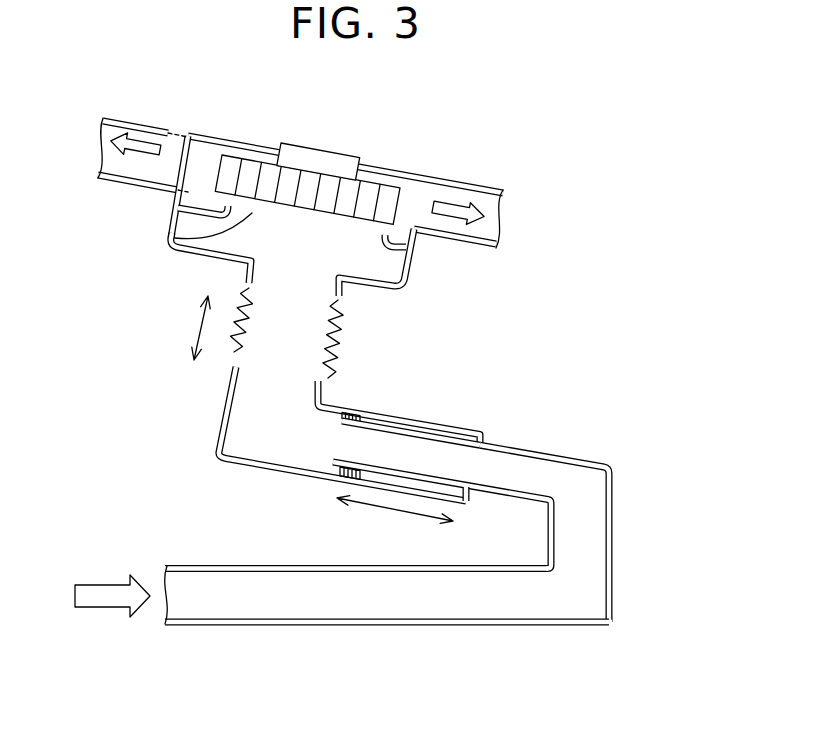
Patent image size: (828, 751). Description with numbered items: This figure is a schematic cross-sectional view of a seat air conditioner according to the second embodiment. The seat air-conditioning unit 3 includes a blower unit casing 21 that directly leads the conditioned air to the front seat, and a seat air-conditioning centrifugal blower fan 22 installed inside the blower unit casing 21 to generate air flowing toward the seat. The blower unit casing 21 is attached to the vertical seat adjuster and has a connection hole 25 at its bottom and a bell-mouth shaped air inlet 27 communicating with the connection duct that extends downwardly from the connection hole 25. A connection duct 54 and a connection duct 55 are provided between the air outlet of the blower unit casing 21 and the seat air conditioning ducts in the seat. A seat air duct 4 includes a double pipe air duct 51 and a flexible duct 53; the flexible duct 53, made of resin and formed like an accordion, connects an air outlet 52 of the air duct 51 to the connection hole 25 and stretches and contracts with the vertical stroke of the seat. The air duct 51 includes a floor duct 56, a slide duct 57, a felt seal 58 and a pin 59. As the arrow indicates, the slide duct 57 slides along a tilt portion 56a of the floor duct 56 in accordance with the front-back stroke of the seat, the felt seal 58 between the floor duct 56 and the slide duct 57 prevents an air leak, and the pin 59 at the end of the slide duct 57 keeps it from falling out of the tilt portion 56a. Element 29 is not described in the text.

The seat air-conditioning unit 3 is at (461, 144).
The seat air duct 4 is at (597, 656).
The blower unit casing 21 is at (175, 207).
The seat air-conditioning centrifugal blower fan 22 is at (243, 170).
The connection hole 25 is at (298, 273).
The bell-mouth shaped air inlet 27 is at (173, 240).
The cover 29 is at (317, 162).
The double pipe air duct 51 is at (627, 559).
The air outlet 52 is at (273, 377).
The flexible duct 53 is at (342, 332).
The connection duct 54 is at (140, 126).
The connection duct 55 is at (497, 186).
The floor duct 56 is at (346, 625).
The tilt portion 56a is at (598, 462).
The slide duct 57 is at (400, 413).
The felt seal 58 is at (345, 480).
The pin 59 is at (490, 442).